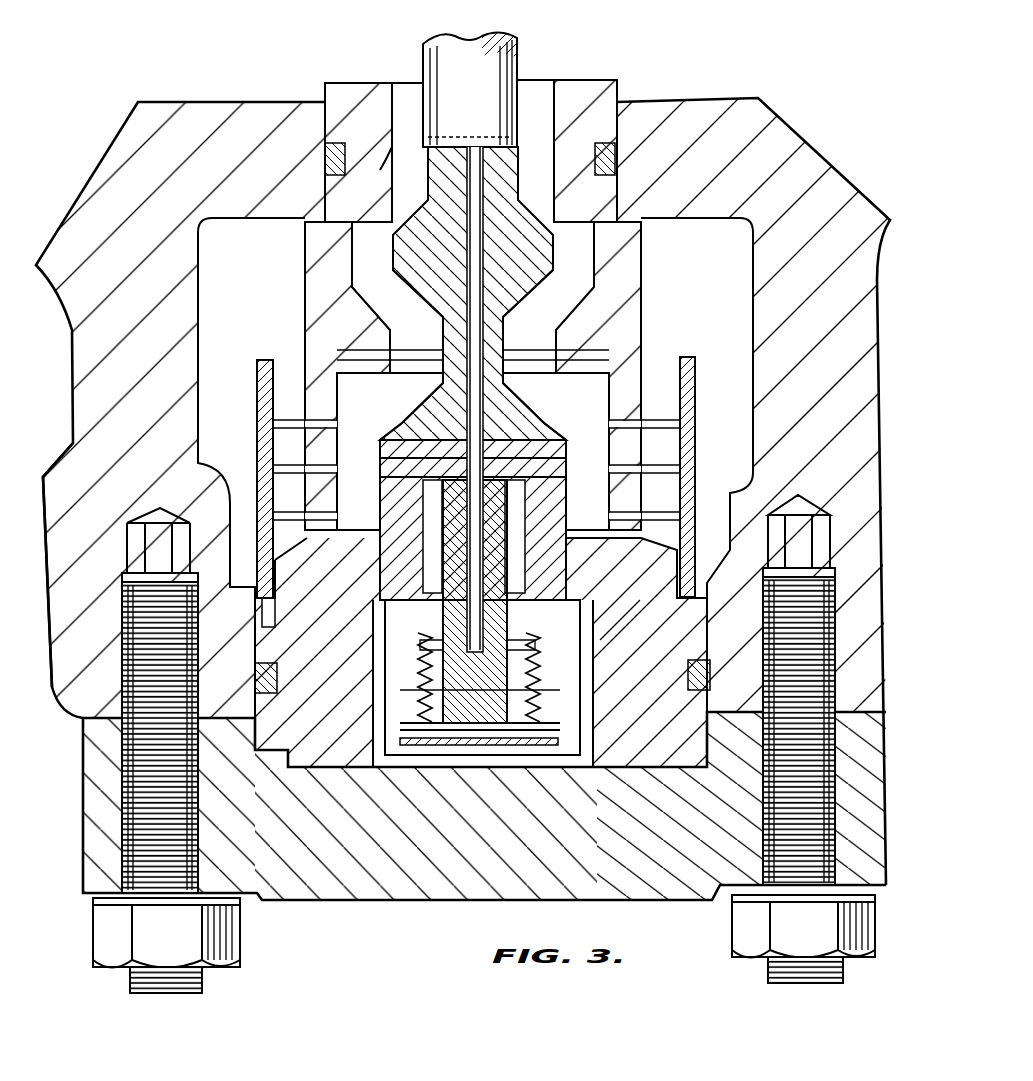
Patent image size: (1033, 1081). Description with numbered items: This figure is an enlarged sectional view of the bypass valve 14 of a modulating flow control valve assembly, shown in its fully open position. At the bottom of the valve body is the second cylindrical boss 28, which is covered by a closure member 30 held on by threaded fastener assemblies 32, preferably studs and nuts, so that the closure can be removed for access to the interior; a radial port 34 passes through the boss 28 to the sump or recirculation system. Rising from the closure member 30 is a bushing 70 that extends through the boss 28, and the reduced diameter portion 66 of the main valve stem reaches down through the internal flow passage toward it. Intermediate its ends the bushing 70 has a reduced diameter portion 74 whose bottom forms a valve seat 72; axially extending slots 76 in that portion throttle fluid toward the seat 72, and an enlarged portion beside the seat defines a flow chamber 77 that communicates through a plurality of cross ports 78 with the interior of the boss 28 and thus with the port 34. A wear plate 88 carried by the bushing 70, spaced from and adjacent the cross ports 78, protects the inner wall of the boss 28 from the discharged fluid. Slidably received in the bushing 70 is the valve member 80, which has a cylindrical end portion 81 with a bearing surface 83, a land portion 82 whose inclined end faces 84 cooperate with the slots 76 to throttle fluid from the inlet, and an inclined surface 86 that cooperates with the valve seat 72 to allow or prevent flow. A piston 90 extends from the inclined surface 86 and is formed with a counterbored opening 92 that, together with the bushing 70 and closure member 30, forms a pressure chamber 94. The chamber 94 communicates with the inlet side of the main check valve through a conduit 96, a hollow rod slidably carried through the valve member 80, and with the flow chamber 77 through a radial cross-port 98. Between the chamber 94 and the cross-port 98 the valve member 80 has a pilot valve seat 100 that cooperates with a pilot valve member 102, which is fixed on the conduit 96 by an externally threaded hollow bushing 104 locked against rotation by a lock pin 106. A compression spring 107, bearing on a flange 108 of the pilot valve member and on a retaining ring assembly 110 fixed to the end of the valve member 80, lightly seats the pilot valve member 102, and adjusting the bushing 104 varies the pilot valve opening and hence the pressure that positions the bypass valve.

The bypass valve 14 is at (365, 370).
The second cylindrical boss 28 is at (880, 275).
The closure member 30 is at (82, 760).
The threaded fastener assemblies 32 is at (108, 935).
The radial port 34 is at (44, 500).
The reduced diameter portion 66 is at (490, 62).
The bushing 70 is at (334, 88).
The valve seat 72 is at (392, 368).
The reduced diameter portion 74 is at (382, 160).
The axially extending slots 76 is at (560, 195).
The flow chamber 77 is at (556, 440).
The cross ports 78 is at (318, 425).
The valve member 80 is at (582, 730).
The cylindrical end portion 81 is at (430, 160).
The land portion 82 is at (393, 250).
The bearing surface 83 is at (440, 148).
The inclined end faces 84 is at (538, 215).
The inclined surface 86 is at (520, 372).
The wear plate 88 is at (255, 364).
The piston 90 is at (590, 622).
The counterbored opening 92 is at (585, 600).
The pressure chamber 94 is at (480, 722).
The conduit 96 is at (472, 145).
The cross-port 98 is at (570, 462).
The pilot valve seat 100 is at (400, 468).
The pilot valve member 102 is at (440, 495).
The hollow bushing 104 is at (412, 608).
The lock pin 106 is at (418, 683).
The compression spring 107 is at (420, 692).
The flange 108 is at (545, 490).
The retaining ring assembly 110 is at (430, 750).